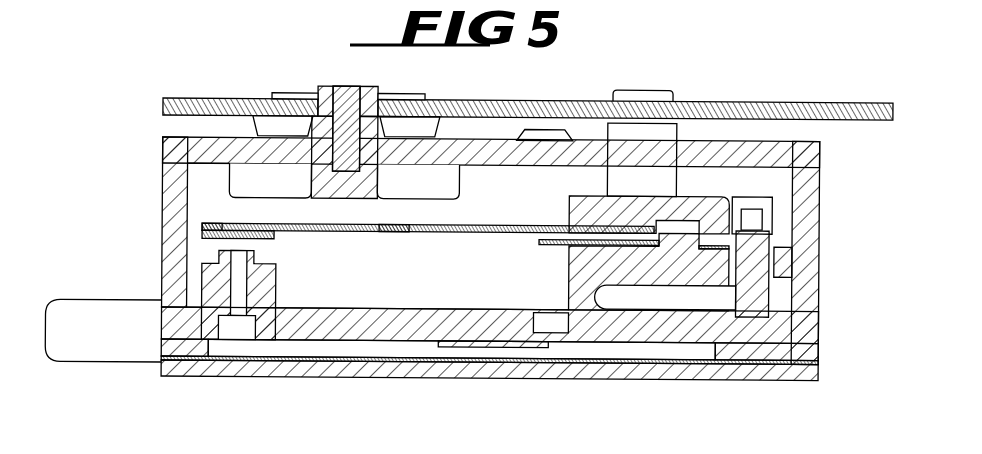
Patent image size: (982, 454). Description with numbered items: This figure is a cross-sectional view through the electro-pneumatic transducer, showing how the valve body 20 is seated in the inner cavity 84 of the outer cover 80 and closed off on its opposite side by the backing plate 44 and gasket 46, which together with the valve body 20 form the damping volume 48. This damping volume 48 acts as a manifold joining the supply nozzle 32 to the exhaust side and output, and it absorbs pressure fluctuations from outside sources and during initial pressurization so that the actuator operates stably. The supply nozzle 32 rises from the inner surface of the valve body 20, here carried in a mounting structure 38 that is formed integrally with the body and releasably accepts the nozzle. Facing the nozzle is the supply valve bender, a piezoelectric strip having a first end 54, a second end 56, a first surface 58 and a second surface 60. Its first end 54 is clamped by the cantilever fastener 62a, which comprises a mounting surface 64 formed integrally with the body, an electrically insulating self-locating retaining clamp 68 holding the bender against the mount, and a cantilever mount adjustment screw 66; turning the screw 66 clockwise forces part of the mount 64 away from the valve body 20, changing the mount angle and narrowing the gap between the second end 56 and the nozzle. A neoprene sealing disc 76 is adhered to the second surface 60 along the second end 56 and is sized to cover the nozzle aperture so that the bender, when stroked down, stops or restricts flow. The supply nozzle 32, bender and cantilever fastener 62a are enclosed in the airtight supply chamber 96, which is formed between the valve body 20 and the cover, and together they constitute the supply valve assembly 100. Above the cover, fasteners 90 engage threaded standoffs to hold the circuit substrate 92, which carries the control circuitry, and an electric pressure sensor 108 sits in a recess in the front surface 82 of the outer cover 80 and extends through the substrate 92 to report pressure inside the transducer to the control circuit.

The valve body 20 is at (743, 344).
The supply nozzle 32 is at (263, 258).
The mounting structure 38 is at (270, 291).
The backing plate 44 is at (803, 375).
The gasket 46 is at (820, 359).
The damping volume 48 is at (567, 349).
The first end 54 is at (572, 240).
The second end 56 is at (203, 225).
The first surface 58 is at (462, 224).
The second surface 60 is at (392, 232).
The cantilever fastener 62a is at (565, 212).
The mounting surface 64 is at (672, 268).
The cantilever mount adjustment screw 66 is at (770, 219).
The retaining clamp 68 is at (720, 192).
The sealing disc 76 is at (203, 236).
The outer cover 80 is at (812, 239).
The front surface 82 is at (816, 262).
The inner cavity 84 is at (795, 294).
The fastener 90 is at (370, 87).
The circuit substrate 92 is at (770, 98).
The supply chamber 96 is at (370, 296).
The supply valve assembly 100 is at (486, 287).
The electric pressure sensor 108 is at (543, 127).